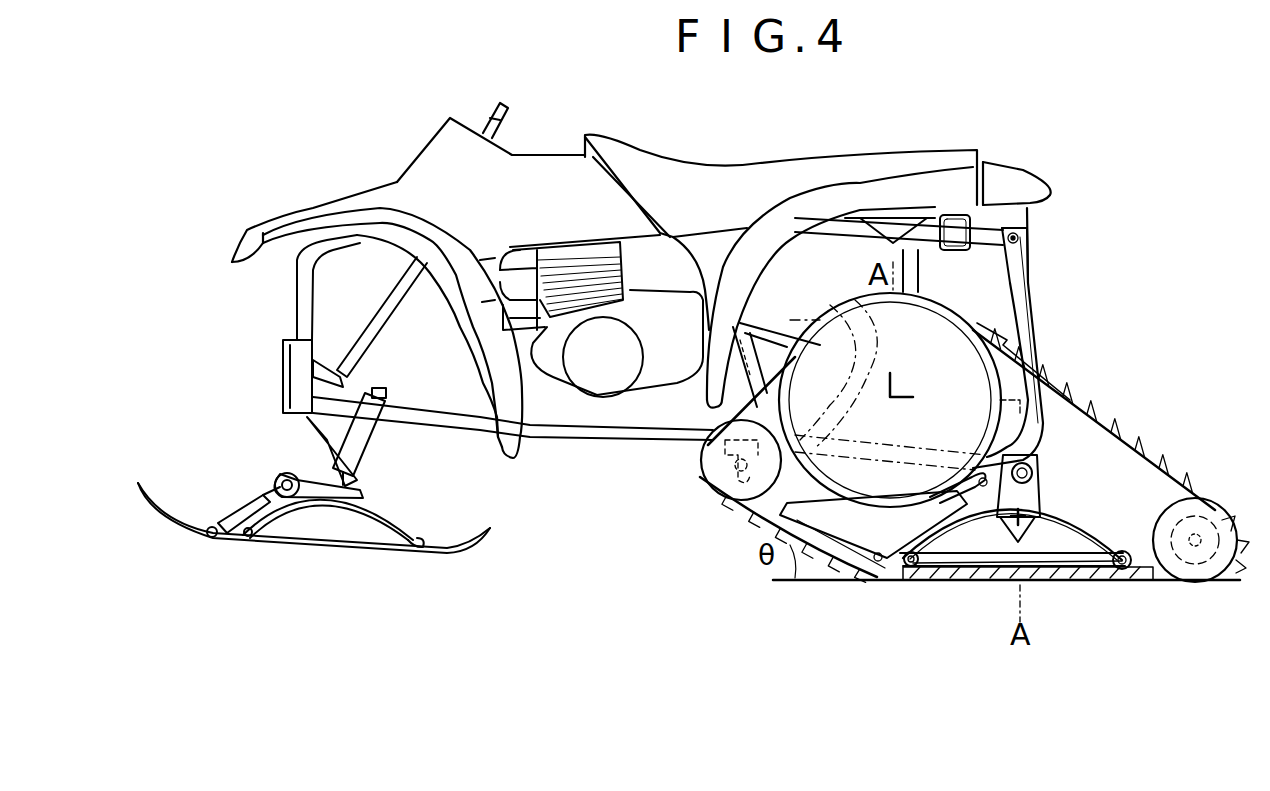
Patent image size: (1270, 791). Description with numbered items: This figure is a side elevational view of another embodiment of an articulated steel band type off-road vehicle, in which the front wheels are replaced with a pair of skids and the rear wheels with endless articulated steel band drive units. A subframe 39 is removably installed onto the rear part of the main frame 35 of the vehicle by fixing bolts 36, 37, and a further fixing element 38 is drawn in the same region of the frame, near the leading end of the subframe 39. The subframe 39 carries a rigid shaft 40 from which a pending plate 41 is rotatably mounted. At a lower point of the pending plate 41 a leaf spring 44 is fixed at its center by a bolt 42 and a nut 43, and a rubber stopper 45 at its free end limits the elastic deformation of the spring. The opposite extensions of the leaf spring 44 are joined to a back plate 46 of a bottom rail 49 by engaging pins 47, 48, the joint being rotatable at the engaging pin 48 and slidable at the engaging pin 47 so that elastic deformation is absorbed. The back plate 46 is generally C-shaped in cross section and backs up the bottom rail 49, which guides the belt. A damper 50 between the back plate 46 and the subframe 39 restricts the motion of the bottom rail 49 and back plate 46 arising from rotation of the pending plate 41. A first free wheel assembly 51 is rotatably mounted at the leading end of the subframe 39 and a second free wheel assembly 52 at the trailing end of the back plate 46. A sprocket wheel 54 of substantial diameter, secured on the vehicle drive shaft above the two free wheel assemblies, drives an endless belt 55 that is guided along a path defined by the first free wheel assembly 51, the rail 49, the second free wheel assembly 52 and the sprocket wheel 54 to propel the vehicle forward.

The main frame 35 is at (992, 245).
The fixing bolt 36 is at (1020, 238).
The fixing bolt 37 is at (785, 417).
The idler wheel 38 is at (716, 450).
The subframe 39 is at (1035, 305).
The rigid shaft 40 is at (1038, 460).
The pending plate 41 is at (1030, 497).
The bolt 42 is at (947, 497).
The nut 43 is at (997, 548).
The leaf spring 44 is at (1074, 552).
The rubber stopper 45 is at (1023, 528).
The back plate 46 is at (1070, 560).
The engaging pin 47 is at (911, 567).
The engaging pin 48 is at (1125, 568).
The bottom rail 49 is at (1108, 573).
The damper 50 is at (923, 520).
The first free wheel assembly 51 is at (720, 480).
The second free wheel assembly 52 is at (1207, 515).
The sprocket wheel 54 is at (995, 383).
The endless belt 55 is at (1150, 453).